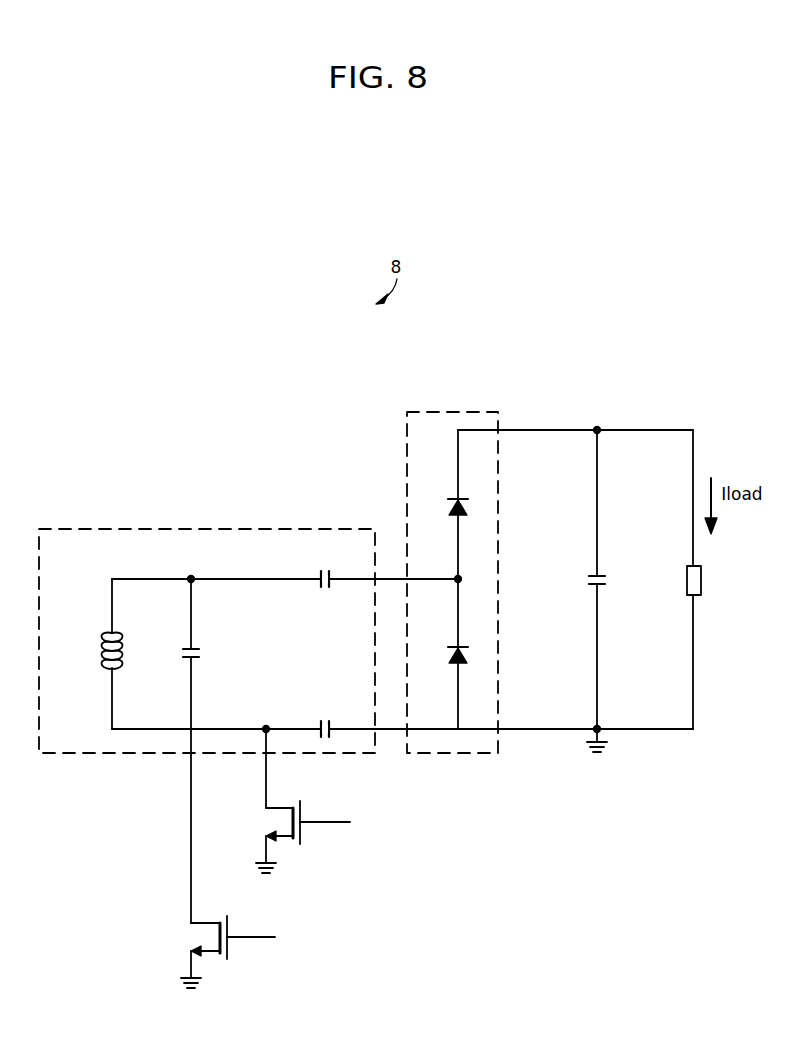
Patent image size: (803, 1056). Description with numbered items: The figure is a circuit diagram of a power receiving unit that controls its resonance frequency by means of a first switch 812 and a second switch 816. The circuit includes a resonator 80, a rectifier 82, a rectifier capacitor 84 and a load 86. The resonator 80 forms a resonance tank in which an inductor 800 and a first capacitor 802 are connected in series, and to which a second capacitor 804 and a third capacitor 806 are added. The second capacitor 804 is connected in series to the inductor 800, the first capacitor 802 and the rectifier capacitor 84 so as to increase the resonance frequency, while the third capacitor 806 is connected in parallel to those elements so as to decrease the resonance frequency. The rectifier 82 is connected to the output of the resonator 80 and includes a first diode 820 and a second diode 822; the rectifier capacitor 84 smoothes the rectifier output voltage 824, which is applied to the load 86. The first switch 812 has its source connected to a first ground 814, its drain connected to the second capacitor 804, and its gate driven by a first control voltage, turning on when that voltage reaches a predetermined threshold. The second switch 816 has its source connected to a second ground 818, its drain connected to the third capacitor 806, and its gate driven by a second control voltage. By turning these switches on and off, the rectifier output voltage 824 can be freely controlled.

The resonator 80 is at (196, 527).
The rectifier 82 is at (440, 410).
The rectifier capacitor CRECT 84 is at (604, 572).
The load 86 is at (702, 594).
The inductor Lrx 800 is at (102, 672).
The first capacitor Cs 802 is at (319, 584).
The second capacitor Cdh 804 is at (318, 726).
The third capacitor Cdl 806 is at (186, 650).
The first switch M0 812 is at (302, 840).
The first ground 814 is at (278, 871).
The second switch M1 816 is at (228, 956).
The second ground 818 is at (200, 986).
The diode D1 820 is at (468, 506).
The diode D2 822 is at (468, 654).
The rectifier output voltage VRECT 824 is at (596, 400).